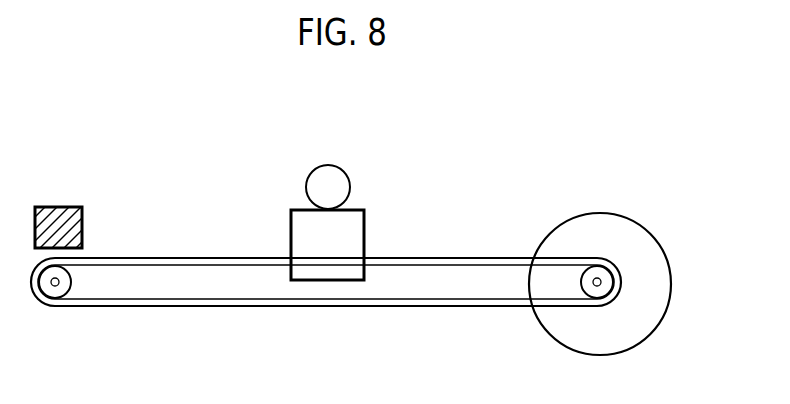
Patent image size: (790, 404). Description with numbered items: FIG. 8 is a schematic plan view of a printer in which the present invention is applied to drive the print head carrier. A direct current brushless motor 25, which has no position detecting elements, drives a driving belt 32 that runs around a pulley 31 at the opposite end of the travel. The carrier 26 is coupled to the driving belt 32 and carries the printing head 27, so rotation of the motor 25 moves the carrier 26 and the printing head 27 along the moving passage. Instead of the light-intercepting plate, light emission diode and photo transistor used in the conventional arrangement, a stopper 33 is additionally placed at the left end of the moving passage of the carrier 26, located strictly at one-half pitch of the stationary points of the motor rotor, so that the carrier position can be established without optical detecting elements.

The direct current brushless motor 25 is at (600, 253).
The carrier 26 is at (367, 244).
The printing head 27 is at (360, 172).
The pulley 31 is at (55, 314).
The driving belt 32 is at (326, 310).
The stopper 33 is at (62, 191).